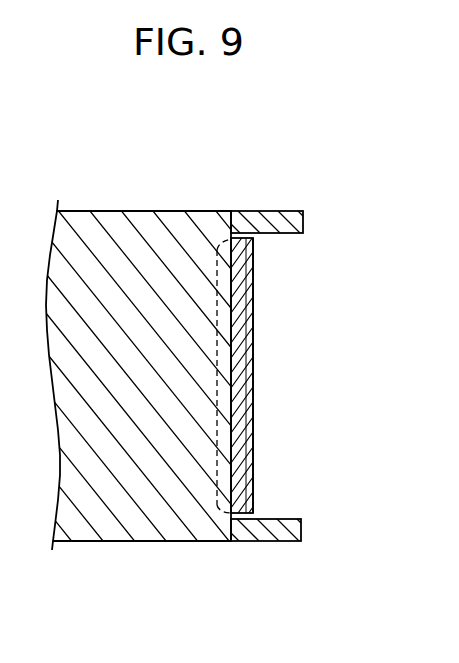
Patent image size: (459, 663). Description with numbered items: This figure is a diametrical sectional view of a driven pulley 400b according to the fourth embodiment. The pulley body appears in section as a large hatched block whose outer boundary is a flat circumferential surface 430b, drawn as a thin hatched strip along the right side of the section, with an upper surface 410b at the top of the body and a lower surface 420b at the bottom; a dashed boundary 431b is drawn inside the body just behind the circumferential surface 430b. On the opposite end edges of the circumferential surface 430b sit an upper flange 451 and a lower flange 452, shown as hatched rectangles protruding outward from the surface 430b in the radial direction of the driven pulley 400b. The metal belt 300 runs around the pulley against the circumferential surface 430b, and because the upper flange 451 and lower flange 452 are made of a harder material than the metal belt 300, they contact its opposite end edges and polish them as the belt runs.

The driven pulley 400b is at (113, 217).
The first surface 410b is at (171, 200).
The second surface 420b is at (165, 553).
The flat circumferential surface 430b is at (255, 304).
The boundary region 431b is at (216, 360).
The metal belt 300 is at (254, 362).
The upper flange 451 is at (303, 219).
The lower flange 452 is at (302, 530).